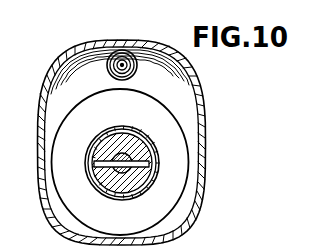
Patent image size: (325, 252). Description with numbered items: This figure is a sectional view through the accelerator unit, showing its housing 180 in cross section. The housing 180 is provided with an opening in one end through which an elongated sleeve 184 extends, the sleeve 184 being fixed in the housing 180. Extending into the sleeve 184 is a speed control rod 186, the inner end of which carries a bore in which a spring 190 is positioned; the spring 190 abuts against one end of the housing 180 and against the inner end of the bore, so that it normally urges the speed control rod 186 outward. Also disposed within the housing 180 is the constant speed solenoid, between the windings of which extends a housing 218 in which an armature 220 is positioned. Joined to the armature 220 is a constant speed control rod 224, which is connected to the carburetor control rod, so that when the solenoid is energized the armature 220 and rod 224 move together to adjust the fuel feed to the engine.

The housing 180 is at (205, 156).
The elongated sleeve 184 is at (117, 46).
The speed control rod 186 is at (87, 50).
The spring 190 is at (129, 45).
The housing 218 is at (144, 117).
The armature 220 is at (143, 179).
The constant speed control rod 224 is at (96, 182).